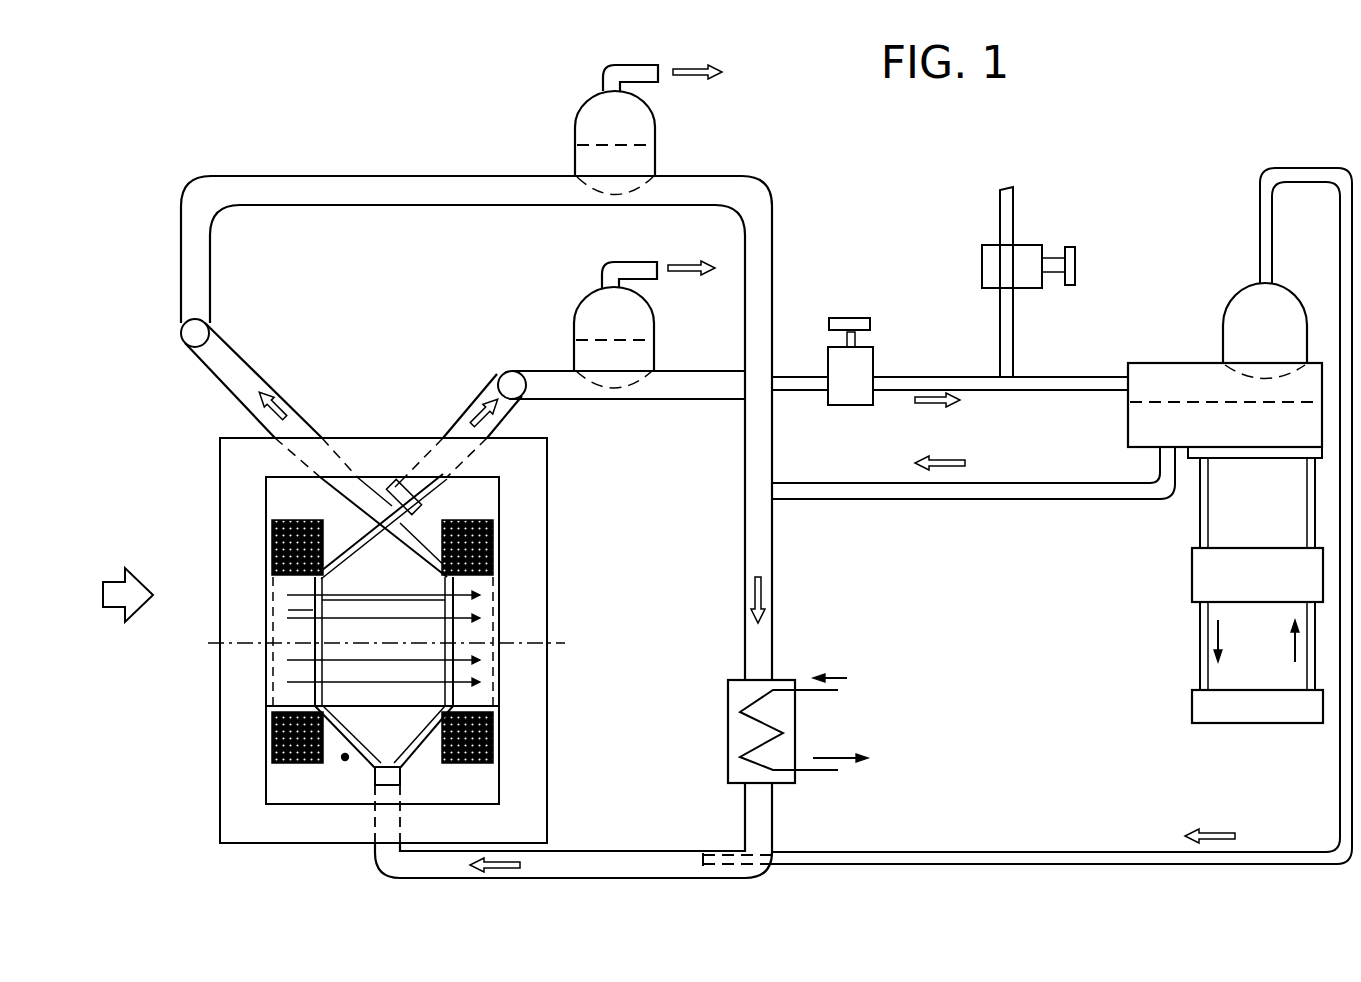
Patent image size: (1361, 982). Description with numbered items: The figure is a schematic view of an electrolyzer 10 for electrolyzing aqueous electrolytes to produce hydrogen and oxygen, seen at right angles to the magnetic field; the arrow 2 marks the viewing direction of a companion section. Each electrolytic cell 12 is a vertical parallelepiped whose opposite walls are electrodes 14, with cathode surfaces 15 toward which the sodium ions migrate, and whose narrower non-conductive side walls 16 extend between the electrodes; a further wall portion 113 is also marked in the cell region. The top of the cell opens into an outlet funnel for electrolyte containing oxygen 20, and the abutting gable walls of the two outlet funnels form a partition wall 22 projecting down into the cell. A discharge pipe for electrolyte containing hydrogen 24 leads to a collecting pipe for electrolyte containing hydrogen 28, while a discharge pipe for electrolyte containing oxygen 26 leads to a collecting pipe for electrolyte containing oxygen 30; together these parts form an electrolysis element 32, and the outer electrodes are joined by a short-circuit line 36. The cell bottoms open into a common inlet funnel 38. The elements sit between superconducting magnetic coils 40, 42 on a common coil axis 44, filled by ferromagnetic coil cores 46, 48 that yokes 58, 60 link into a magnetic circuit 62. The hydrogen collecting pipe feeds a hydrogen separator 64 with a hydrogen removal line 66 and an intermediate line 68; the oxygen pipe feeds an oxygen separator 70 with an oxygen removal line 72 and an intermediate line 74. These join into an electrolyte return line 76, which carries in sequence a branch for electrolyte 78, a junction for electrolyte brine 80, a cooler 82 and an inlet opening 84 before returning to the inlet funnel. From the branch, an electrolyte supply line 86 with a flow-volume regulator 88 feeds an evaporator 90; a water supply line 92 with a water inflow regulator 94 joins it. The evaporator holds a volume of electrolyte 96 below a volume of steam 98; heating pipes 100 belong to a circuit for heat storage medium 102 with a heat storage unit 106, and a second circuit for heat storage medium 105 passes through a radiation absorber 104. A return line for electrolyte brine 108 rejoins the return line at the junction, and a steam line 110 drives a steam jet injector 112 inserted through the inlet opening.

The section view direction arrow 2 is at (128, 570).
The electrolyzer 10 is at (205, 460).
The electrolytic cell 12 is at (305, 678).
The electrodes 14 is at (374, 641).
The cathode surfaces 15 is at (374, 688).
The side walls 16 is at (312, 652).
The outlet funnel for electrolyte containing oxygen 20 is at (400, 540).
The partition wall 22 is at (455, 600).
The discharge pipe for electrolyte containing hydrogen 24 is at (222, 392).
The discharge pipe for electrolyte containing oxygen 26 is at (470, 408).
The collecting pipe for electrolyte containing hydrogen 28 is at (324, 176).
The collecting pipe for electrolyte containing oxygen 30 is at (543, 371).
The electrolysis element 32 is at (432, 755).
The short-circuit line 36 is at (345, 760).
The inlet funnel 38 is at (375, 740).
The superconducting magnetic coil 40 is at (272, 763).
The superconducting magnetic coil 42 is at (495, 545).
The coil axis 44 is at (505, 640).
The coil core 46 is at (290, 610).
The coil core 48 is at (478, 655).
The yoke 58 is at (358, 438).
The yoke 60 is at (373, 850).
The magnetic circuit 62 is at (555, 742).
The hydrogen separator 64 is at (570, 122).
The hydrogen removal line 66 is at (625, 65).
The intermediate line 68 is at (712, 172).
The oxygen separator 70 is at (570, 320).
The oxygen removal line 72 is at (636, 262).
The intermediate line 74 is at (692, 371).
The electrolyte return line 76 is at (620, 851).
The branch for electrolyte 78 is at (780, 397).
The junction for electrolyte brine 80 is at (780, 504).
The cooler 82 is at (805, 712).
The inlet opening for steam jet injector 84 is at (775, 855).
The electrolyte supply line 86 is at (793, 377).
The flow-volume regulator 88 is at (878, 338).
The evaporator 90 is at (1140, 360).
The water supply line 92 is at (1010, 200).
The water inflow regulator 94 is at (1050, 240).
The volume of electrolyte 96 is at (1150, 420).
The volume of steam 98 is at (1242, 300).
The heating pipes 100 is at (1285, 450).
The circuit for heat storage medium 102 is at (1198, 510).
The radiation absorber 104 is at (1195, 708).
The second circuit for heat storage medium 105 is at (1198, 636).
The heat storage unit 106 is at (1195, 575).
The return line for electrolyte brine 108 is at (968, 499).
The steam line 110 is at (1340, 770).
The steam jet injector 112 is at (705, 852).
The inlet slot 113 is at (297, 597).